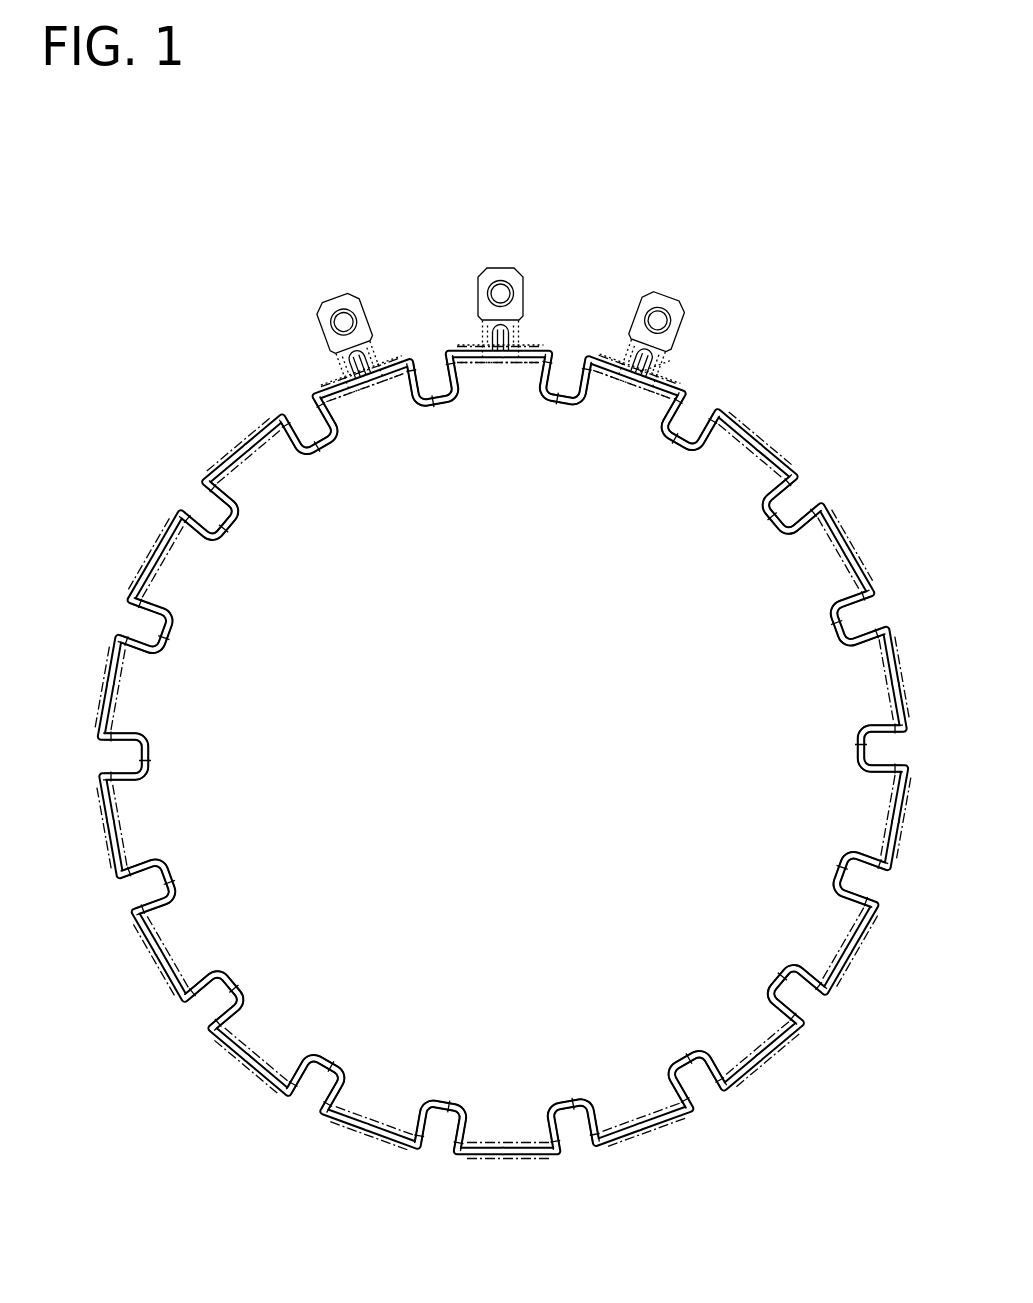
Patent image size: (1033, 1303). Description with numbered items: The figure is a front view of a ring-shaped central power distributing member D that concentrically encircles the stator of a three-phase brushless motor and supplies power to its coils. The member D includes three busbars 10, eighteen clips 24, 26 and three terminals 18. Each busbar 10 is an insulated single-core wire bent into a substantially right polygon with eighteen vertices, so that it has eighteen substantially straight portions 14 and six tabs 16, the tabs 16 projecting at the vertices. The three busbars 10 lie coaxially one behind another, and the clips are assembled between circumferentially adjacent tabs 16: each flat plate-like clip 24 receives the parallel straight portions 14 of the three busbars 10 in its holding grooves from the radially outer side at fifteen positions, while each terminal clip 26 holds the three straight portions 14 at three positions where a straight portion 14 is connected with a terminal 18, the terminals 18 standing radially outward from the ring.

The busbar 10 is at (848, 379).
The straight portion 14 is at (503, 793).
The tab 16 is at (503, 753).
The terminal 18 is at (501, 293).
The clip 24 is at (503, 788).
The terminal clip 26 is at (694, 349).
The central power distributing member D is at (769, 247).